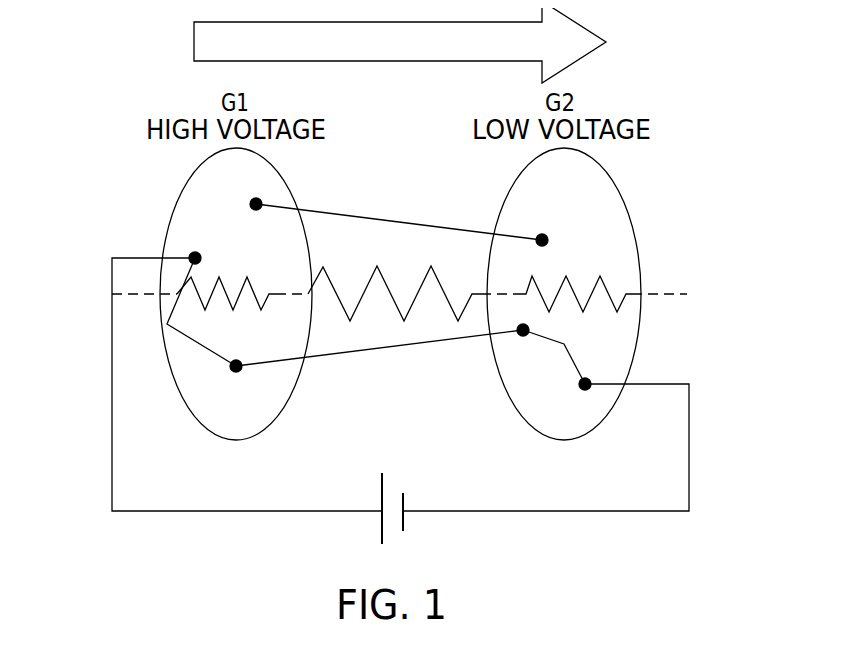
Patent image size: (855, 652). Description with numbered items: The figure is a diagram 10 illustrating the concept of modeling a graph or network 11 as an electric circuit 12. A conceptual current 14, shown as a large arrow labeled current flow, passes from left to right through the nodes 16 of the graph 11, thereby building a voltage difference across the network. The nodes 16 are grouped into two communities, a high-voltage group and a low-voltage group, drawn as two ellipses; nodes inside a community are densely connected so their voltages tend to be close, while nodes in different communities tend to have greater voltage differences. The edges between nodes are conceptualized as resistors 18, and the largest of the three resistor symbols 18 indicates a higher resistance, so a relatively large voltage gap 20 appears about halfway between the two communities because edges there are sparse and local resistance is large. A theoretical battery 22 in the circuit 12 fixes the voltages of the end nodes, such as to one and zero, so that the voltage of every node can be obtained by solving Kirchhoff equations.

The diagram 10 is at (68, 185).
The graph or network 11 is at (731, 108).
The electric circuit 12 is at (400, 407).
The current 14 is at (390, 45).
The nodes 16 is at (252, 200).
The resistors 18 is at (378, 265).
The voltage gap 20 is at (388, 361).
The battery 22 is at (405, 485).